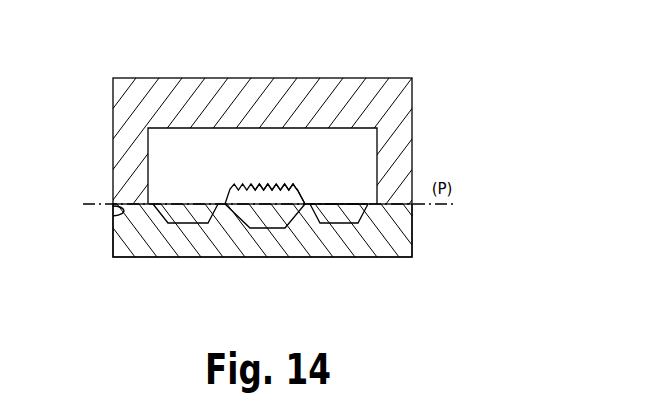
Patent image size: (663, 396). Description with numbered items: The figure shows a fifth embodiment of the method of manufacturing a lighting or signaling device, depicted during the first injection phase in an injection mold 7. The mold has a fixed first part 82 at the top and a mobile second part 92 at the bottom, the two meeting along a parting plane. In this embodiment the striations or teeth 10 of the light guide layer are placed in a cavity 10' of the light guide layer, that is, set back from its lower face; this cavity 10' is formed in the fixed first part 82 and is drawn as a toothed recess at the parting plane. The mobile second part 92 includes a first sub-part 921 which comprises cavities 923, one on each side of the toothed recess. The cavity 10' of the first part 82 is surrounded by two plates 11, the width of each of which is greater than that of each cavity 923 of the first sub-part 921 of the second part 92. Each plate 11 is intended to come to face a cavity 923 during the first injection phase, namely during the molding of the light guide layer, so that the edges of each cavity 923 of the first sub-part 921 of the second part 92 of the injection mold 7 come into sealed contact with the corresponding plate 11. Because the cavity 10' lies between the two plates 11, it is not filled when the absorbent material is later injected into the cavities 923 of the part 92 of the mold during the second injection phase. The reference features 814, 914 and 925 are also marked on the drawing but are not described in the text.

The injection mold 7 is at (386, 274).
The first part 82 is at (158, 78).
The cavity 814 is at (280, 136).
The bonding layer 914 is at (270, 186).
The striations or teeth 10 is at (265, 172).
The cavity 10' is at (298, 173).
The plate 11 is at (325, 204).
The cavities 923 is at (178, 213).
The side metallization 925 is at (112, 218).
The second part 92 is at (157, 258).
The first sub-part 921 is at (247, 226).